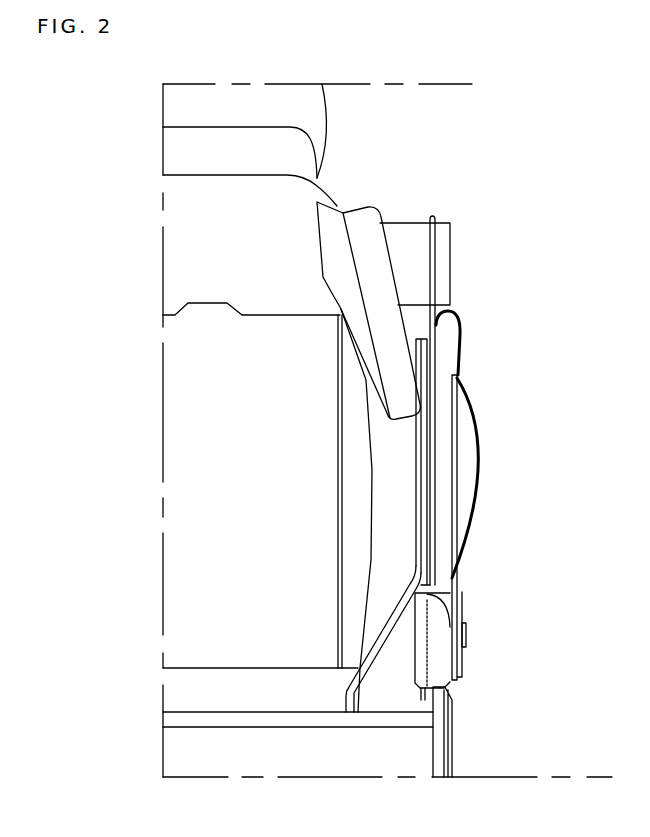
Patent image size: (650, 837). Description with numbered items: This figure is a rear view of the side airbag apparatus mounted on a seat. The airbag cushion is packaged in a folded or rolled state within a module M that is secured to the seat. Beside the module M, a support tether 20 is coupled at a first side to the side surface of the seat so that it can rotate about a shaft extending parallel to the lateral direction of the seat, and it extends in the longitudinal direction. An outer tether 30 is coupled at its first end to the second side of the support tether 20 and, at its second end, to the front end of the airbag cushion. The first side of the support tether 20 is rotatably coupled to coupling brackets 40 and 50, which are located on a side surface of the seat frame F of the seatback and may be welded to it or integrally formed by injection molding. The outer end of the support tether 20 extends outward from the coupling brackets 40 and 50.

The coupling bracket 40 is at (440, 243).
The outer tether 30 is at (458, 317).
The support tether 20 is at (433, 350).
The module M is at (413, 583).
The coupling bracket 50 is at (437, 657).
The seat frame F is at (242, 327).